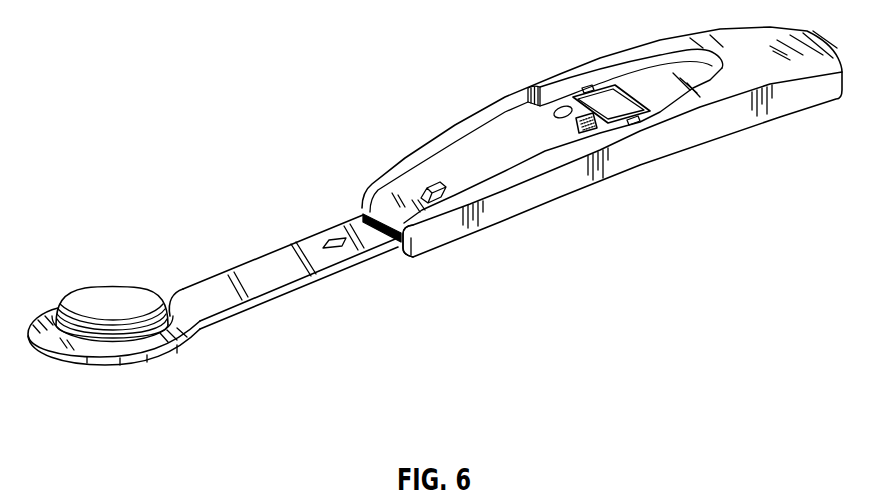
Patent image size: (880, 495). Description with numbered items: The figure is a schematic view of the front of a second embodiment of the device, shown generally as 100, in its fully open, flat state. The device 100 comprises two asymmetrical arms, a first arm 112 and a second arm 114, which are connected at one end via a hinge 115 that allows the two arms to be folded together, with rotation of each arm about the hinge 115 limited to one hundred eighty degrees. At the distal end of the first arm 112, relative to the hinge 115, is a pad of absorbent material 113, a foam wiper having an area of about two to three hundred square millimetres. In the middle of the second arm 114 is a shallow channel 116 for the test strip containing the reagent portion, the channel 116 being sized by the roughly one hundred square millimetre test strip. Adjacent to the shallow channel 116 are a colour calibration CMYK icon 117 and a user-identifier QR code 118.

The device 100 is at (280, 65).
The first arm 112 is at (252, 303).
The pad of absorbent material 113 is at (113, 300).
The second arm 114 is at (697, 123).
The hinge 115 is at (417, 250).
The shallow channel 116 is at (643, 88).
The CMYK icon 117 is at (561, 106).
The QR code 118 is at (603, 130).